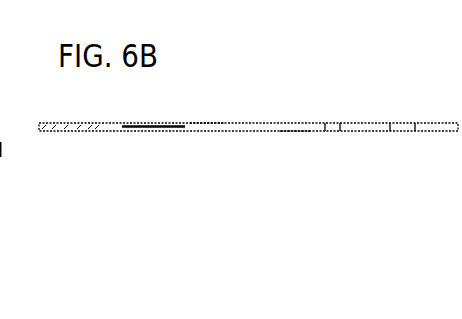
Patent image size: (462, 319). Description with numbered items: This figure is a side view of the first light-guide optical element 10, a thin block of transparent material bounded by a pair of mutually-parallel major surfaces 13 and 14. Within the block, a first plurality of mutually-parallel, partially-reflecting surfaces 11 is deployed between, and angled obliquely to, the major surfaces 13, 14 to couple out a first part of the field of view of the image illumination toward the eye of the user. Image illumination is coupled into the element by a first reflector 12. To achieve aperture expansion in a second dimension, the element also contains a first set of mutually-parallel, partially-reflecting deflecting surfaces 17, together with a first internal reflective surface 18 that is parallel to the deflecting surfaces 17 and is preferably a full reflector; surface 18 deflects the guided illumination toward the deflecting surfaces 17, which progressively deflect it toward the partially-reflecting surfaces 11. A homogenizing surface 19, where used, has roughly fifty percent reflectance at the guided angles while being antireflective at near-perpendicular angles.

The first light-guide optical element 10 is at (248, 132).
The partially-reflecting surfaces 11 is at (68, 133).
The first reflector 12 is at (432, 132).
The major surface 13 is at (207, 124).
The major surface 14 is at (295, 132).
The deflecting surfaces 17 is at (335, 132).
The first internal reflective surface 18 is at (373, 132).
The homogenizing surface 19 is at (152, 133).